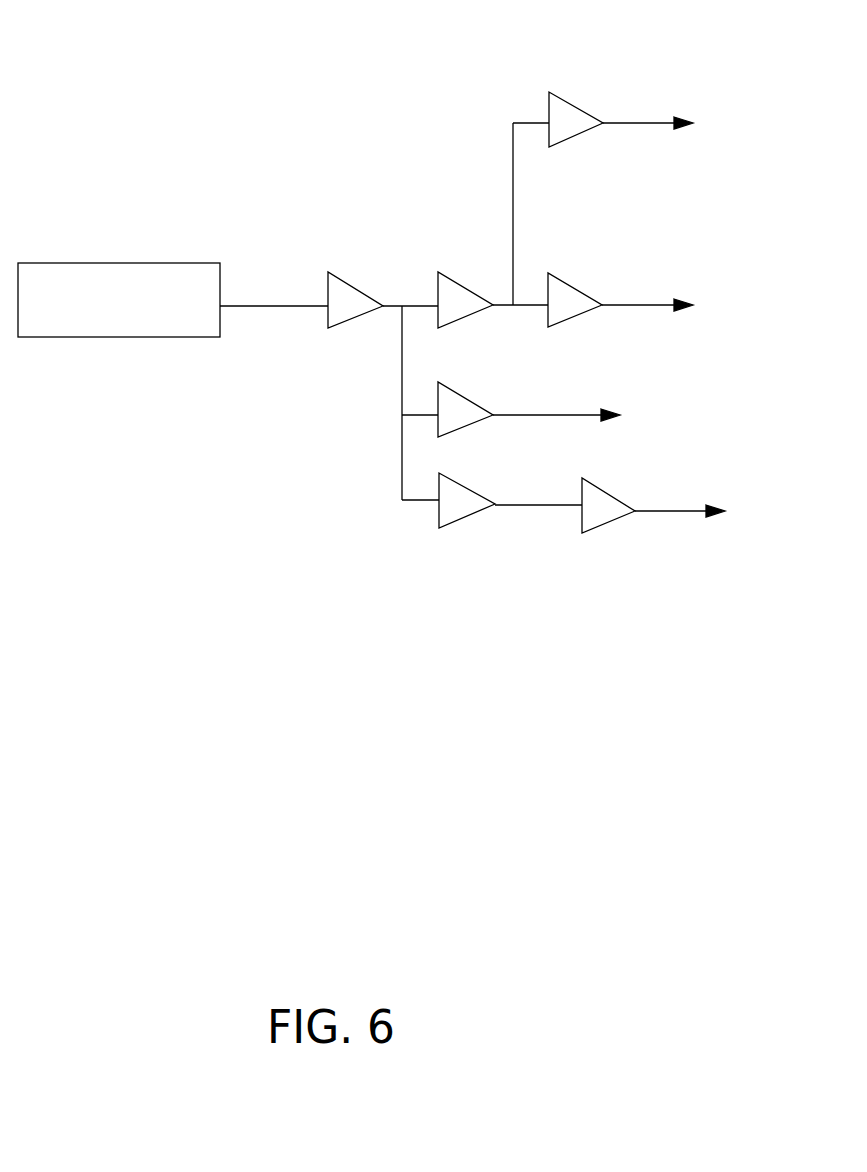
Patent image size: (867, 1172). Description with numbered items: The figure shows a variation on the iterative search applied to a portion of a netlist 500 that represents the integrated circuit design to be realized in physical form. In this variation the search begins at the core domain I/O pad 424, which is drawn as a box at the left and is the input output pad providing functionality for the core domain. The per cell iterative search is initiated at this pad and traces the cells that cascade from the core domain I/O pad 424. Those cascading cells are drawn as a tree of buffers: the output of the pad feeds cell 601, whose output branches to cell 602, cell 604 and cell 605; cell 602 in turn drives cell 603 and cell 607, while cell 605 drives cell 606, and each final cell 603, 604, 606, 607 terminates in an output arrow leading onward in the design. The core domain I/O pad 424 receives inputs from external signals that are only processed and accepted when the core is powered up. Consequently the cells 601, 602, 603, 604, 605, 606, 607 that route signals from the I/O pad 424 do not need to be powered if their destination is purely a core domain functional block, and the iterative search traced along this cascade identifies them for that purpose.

The netlist 500 is at (295, 20).
The core domain I/O pad 424 is at (180, 263).
The cell 601 is at (367, 293).
The cell 602 is at (477, 290).
The cell 603 is at (582, 292).
The cell 604 is at (455, 397).
The cell 605 is at (468, 483).
The cell 606 is at (617, 497).
The cell 607 is at (578, 106).